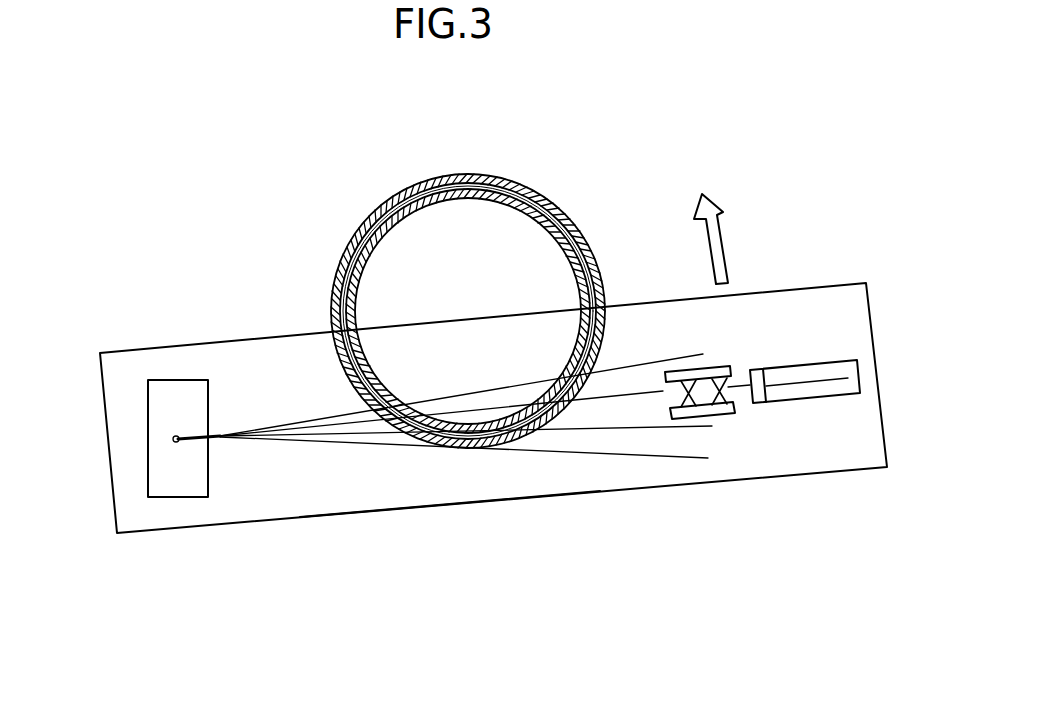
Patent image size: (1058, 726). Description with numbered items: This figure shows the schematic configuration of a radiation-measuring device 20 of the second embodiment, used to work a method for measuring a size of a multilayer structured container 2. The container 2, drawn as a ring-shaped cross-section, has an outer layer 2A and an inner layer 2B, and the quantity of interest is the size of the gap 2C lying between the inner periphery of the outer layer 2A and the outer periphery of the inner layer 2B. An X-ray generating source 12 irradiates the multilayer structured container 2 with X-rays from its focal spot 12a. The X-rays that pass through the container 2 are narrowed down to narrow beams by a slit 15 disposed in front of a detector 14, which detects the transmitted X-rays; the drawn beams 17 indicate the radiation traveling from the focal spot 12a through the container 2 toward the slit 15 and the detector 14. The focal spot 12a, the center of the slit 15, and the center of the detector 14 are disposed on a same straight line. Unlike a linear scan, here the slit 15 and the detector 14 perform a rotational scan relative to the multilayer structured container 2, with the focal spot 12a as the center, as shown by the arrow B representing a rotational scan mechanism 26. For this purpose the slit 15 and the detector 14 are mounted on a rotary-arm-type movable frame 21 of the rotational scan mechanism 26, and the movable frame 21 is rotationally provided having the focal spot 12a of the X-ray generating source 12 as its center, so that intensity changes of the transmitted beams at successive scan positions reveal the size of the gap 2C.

The multilayer structured container 2 is at (508, 287).
The outer layer 2A is at (580, 236).
The inner layer 2B is at (608, 278).
The gap 2C is at (595, 252).
The X-ray generating source 12 is at (192, 499).
The focal spot 12a is at (176, 443).
The detector 14 is at (800, 401).
The slit 15 is at (699, 415).
The light beam 17 is at (608, 398).
The radiation-measuring device 20 is at (318, 540).
The rotary-arm-type movable frame 21 is at (450, 505).
The rotational scan mechanism 26 is at (728, 250).